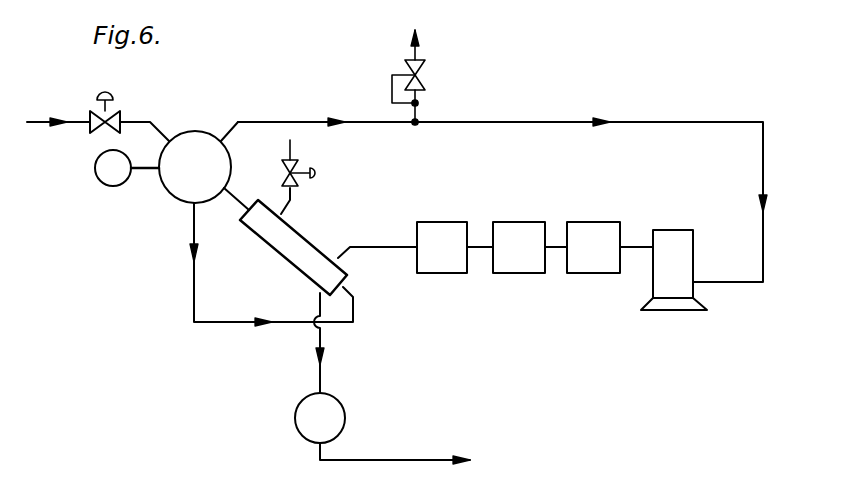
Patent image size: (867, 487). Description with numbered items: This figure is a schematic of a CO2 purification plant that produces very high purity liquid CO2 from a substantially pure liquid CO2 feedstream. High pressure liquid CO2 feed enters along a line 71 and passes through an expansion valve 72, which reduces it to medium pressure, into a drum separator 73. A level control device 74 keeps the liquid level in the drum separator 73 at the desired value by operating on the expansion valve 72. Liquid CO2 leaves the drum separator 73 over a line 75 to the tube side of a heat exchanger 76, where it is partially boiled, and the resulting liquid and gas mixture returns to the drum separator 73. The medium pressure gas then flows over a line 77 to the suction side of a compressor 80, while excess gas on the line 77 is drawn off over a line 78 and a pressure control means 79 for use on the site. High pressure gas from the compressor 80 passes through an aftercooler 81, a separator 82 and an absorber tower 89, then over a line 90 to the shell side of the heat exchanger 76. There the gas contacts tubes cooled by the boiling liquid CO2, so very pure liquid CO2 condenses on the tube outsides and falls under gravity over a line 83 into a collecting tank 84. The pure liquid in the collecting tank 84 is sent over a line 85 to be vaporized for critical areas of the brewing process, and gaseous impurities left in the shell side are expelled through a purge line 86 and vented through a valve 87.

The line 71 is at (50, 117).
The expansion valve 72 is at (108, 113).
The drum separator 73 is at (200, 130).
The level control device 74 is at (110, 186).
The line 75 is at (193, 287).
The heat exchanger 76 is at (318, 246).
The line 77 is at (297, 122).
The line 78 is at (420, 110).
The pressure control means 79 is at (425, 67).
The compressor 80 is at (670, 228).
The aftercooler 81 is at (590, 222).
The separator 82 is at (517, 222).
The line 83 is at (320, 375).
The collecting tank 84 is at (338, 417).
The line 85 is at (415, 458).
The purge line 86 is at (293, 153).
The valve 87 is at (319, 177).
The absorber tower 89 is at (443, 222).
The line 90 is at (387, 248).